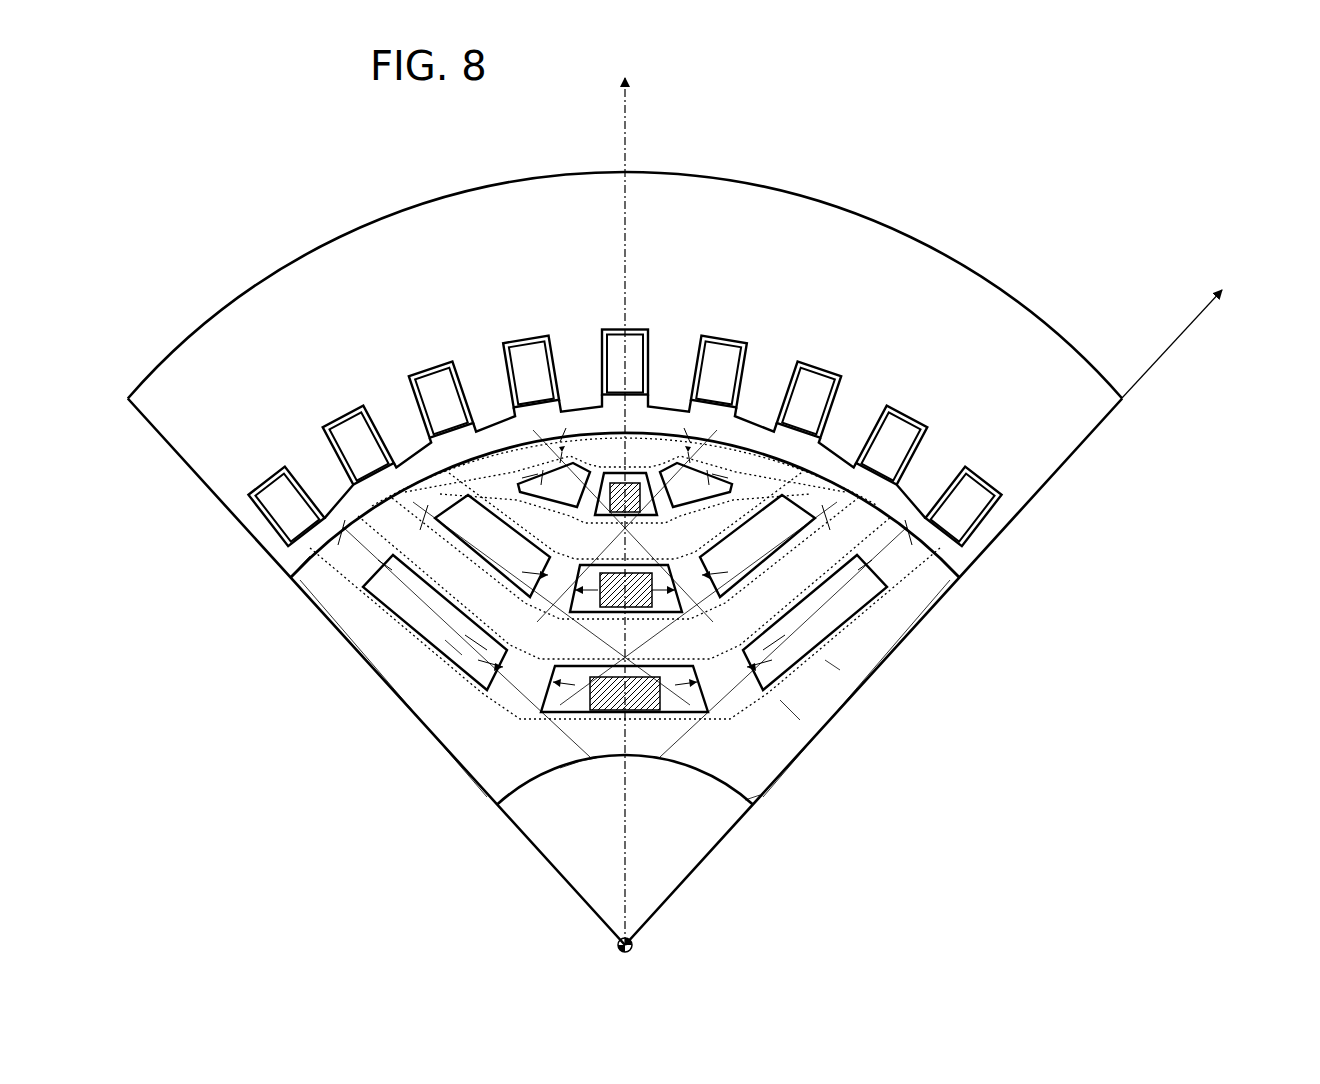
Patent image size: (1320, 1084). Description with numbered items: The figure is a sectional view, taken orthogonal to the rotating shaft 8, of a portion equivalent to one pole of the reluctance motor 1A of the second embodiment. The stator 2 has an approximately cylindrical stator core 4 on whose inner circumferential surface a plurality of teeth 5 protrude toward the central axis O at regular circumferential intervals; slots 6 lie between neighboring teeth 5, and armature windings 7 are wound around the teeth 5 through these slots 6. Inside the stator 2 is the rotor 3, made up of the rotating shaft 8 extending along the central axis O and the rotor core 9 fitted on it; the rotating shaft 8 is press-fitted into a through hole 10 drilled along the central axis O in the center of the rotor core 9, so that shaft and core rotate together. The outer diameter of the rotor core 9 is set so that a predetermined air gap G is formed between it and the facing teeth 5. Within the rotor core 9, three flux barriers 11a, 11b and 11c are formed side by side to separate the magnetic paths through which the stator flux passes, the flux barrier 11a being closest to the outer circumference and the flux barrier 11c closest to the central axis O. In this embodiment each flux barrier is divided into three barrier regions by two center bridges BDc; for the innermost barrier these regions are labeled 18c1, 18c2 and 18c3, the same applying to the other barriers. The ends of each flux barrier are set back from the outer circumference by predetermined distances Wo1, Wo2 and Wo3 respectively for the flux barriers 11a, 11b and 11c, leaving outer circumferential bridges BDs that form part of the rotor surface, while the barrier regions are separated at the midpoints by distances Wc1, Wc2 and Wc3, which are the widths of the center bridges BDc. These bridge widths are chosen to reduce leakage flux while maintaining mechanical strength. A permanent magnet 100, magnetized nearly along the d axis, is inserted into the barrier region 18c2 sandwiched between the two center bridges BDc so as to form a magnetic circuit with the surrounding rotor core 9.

The reluctance motor 1A is at (1100, 222).
The stator 2 is at (882, 220).
The rotor 3 is at (884, 685).
The stator core 4 is at (1047, 372).
The teeth 5 is at (400, 421).
The slots 6 is at (605, 342).
The armature windings 7 is at (535, 378).
The rotating shaft 8 is at (697, 848).
The rotor core 9 is at (802, 722).
The through hole 10 is at (588, 764).
The permanent magnet 100 is at (597, 756).
The flux barrier 11a is at (747, 430).
The flux barrier 11b is at (810, 462).
The flux barrier 11c is at (878, 622).
The barrier region 18c1 is at (453, 640).
The barrier region 18c2 is at (752, 798).
The barrier region 18c3 is at (833, 663).
The air gap G is at (286, 560).
The central axis O is at (640, 940).
The center bridge BDc is at (543, 780).
The outer circumferential bridge BDs is at (928, 532).
The predetermined distance Wo1 is at (625, 449).
The predetermined distance Wo2 is at (629, 484).
The predetermined distance Wo3 is at (625, 525).
The predetermined distance Wc1 is at (625, 561).
The predetermined distance Wc2 is at (625, 660).
The predetermined distance Wc3 is at (625, 658).